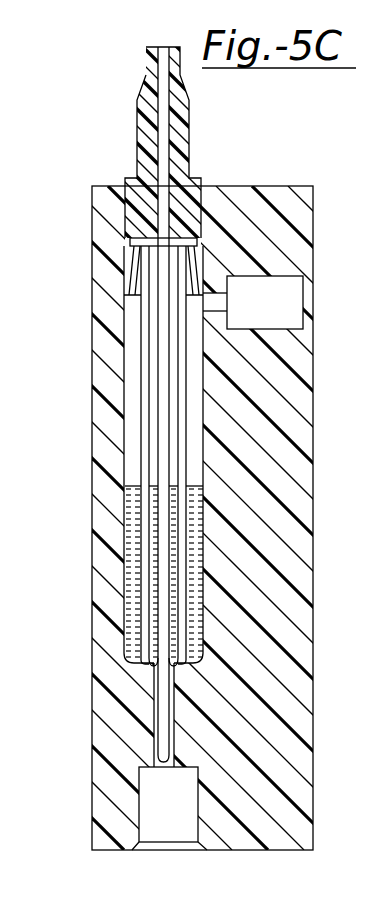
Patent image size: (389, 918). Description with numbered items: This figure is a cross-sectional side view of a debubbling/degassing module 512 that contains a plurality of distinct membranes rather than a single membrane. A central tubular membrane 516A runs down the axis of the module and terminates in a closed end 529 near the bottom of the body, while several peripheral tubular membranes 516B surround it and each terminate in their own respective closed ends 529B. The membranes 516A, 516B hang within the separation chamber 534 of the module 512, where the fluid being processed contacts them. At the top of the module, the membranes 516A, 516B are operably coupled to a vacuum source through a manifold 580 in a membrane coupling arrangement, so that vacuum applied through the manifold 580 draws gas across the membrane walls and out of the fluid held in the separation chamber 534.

The module 512 is at (256, 179).
The manifold 580 is at (128, 245).
The peripheral tubular membranes 516B is at (141, 318).
The central tubular membrane 516A is at (158, 433).
The separation chamber 534 is at (205, 417).
The closed ends 529B is at (148, 663).
The closed end 529 is at (165, 762).